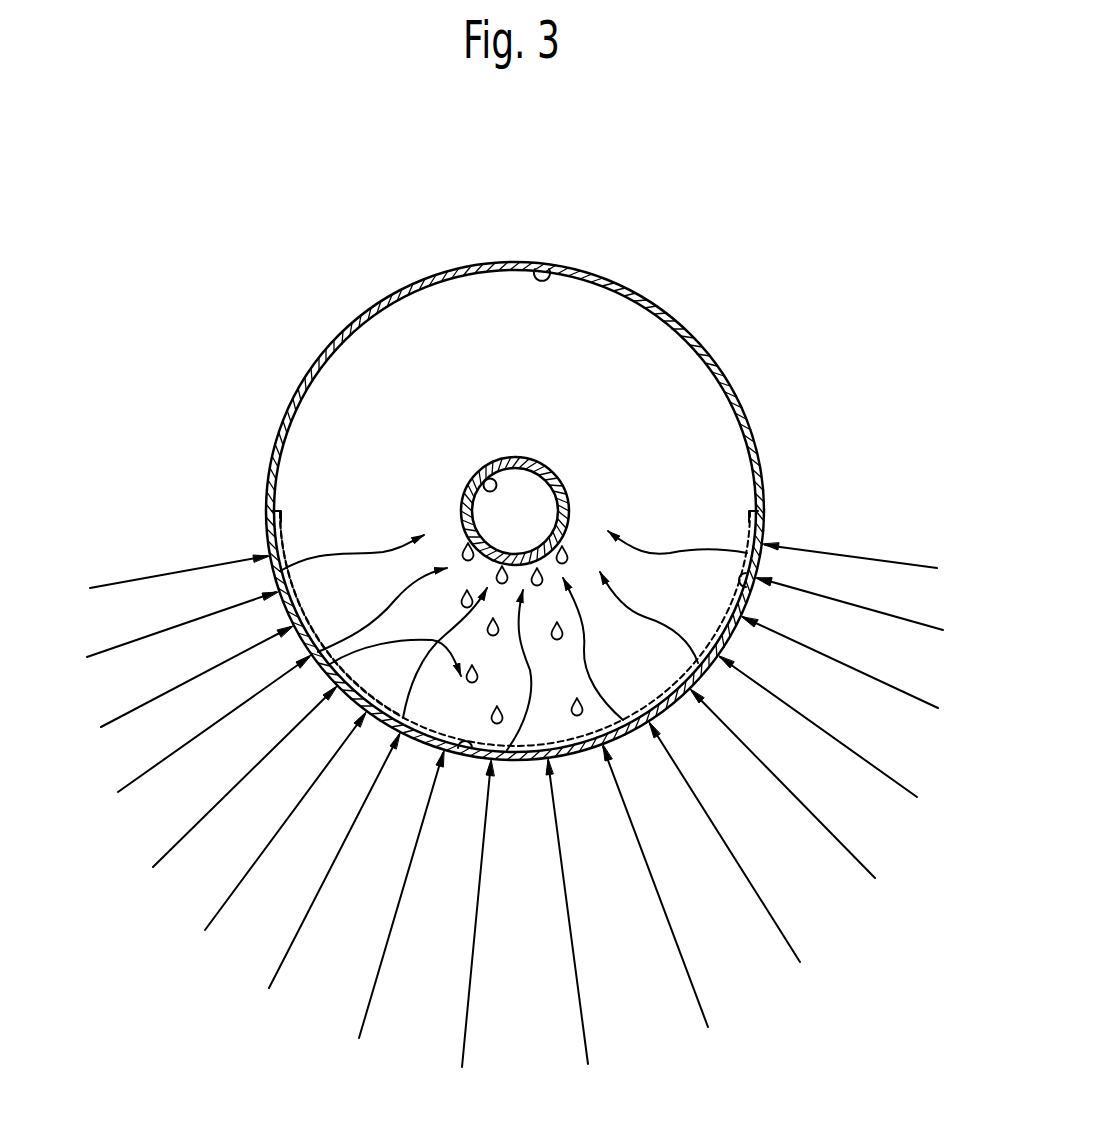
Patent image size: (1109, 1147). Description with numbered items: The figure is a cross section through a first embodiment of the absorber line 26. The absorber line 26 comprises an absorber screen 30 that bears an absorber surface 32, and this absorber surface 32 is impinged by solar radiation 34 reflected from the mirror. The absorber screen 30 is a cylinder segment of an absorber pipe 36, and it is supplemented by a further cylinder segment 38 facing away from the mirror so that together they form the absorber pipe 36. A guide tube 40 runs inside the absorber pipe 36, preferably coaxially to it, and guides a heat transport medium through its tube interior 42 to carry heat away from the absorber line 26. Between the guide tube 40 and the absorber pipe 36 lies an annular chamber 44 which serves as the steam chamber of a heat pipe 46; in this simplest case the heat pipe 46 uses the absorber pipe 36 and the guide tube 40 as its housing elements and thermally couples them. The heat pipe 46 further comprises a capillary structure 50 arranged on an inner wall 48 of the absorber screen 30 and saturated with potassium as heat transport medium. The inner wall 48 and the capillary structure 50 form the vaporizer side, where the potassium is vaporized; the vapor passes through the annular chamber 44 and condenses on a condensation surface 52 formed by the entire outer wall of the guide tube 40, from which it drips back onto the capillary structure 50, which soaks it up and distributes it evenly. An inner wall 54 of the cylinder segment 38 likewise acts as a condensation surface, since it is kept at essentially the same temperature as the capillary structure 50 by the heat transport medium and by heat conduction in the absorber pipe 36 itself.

The absorber line 26 is at (549, 518).
The absorber screen 30 is at (523, 763).
The absorber surface 32 is at (672, 708).
The solar radiation 34 is at (787, 945).
The absorber pipe 36 is at (734, 398).
The cylinder segment 38 is at (380, 303).
The guide tube 40 is at (541, 470).
The tube interior 42 is at (481, 474).
The annular chamber 44 is at (385, 680).
The heat pipe 46 is at (318, 672).
The inner wall 48 is at (467, 753).
The capillary structure 50 is at (750, 597).
The condensation surface 52 is at (569, 509).
The inner wall 54 is at (557, 273).